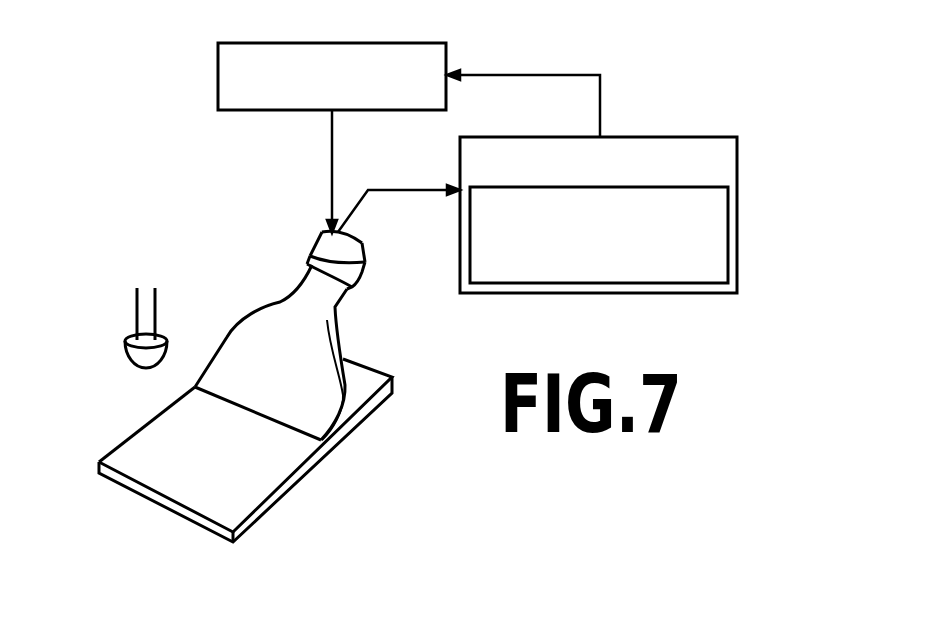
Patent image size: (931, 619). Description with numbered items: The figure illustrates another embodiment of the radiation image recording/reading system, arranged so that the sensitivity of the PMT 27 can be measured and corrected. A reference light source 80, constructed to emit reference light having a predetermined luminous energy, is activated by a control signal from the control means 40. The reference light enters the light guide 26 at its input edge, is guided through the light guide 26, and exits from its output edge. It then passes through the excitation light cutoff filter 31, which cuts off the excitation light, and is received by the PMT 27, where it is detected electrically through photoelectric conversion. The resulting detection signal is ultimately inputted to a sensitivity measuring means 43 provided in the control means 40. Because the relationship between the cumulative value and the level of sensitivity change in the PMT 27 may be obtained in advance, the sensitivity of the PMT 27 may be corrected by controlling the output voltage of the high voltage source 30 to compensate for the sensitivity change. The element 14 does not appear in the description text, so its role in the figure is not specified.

The plate 14 is at (122, 453).
The light guide 26 is at (255, 328).
The PMT 27 is at (357, 250).
The high voltage source 30 is at (430, 43).
The excitation light cutoff filter 31 is at (357, 275).
The control means 40 is at (738, 151).
The sensitivity measuring means 43 is at (729, 199).
The reference light source 80 is at (127, 345).